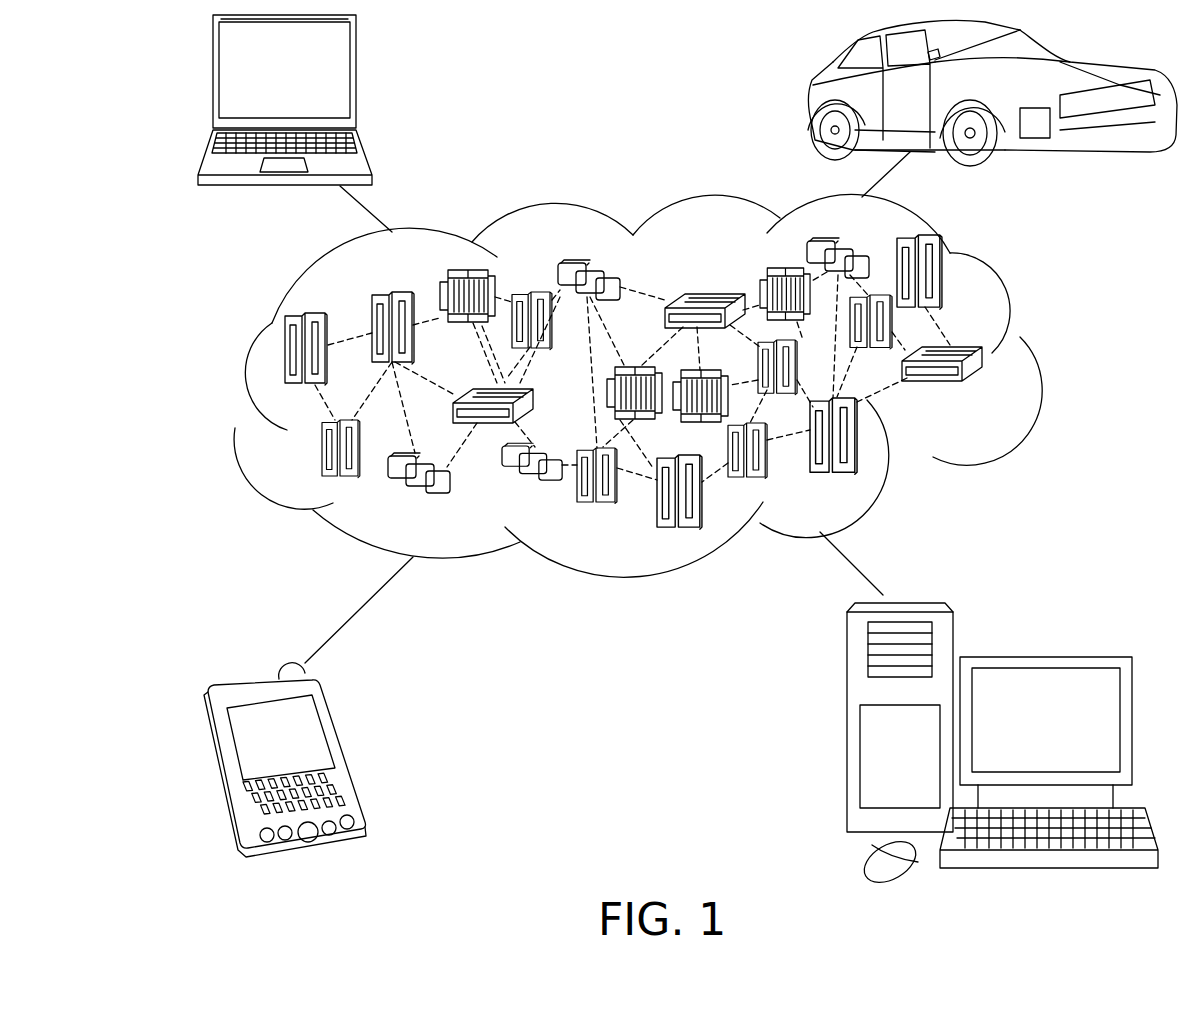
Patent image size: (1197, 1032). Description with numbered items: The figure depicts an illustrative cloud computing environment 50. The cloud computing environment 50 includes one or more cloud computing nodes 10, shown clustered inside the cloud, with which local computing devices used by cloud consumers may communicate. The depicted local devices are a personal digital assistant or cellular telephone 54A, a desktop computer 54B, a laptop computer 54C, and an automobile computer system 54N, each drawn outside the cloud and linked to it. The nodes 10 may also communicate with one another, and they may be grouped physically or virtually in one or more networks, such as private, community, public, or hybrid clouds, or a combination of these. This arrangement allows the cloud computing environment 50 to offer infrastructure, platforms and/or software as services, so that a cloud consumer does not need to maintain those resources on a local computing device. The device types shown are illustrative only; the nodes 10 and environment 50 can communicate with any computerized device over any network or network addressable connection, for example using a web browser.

The cloud computing nodes 10 is at (983, 390).
The cloud computing environment 50 is at (1040, 363).
The personal digital assistant or cellular telephone 54A is at (348, 750).
The desktop computer 54B is at (1044, 655).
The laptop computer 54C is at (357, 79).
The automobile computer system 54N is at (812, 97).